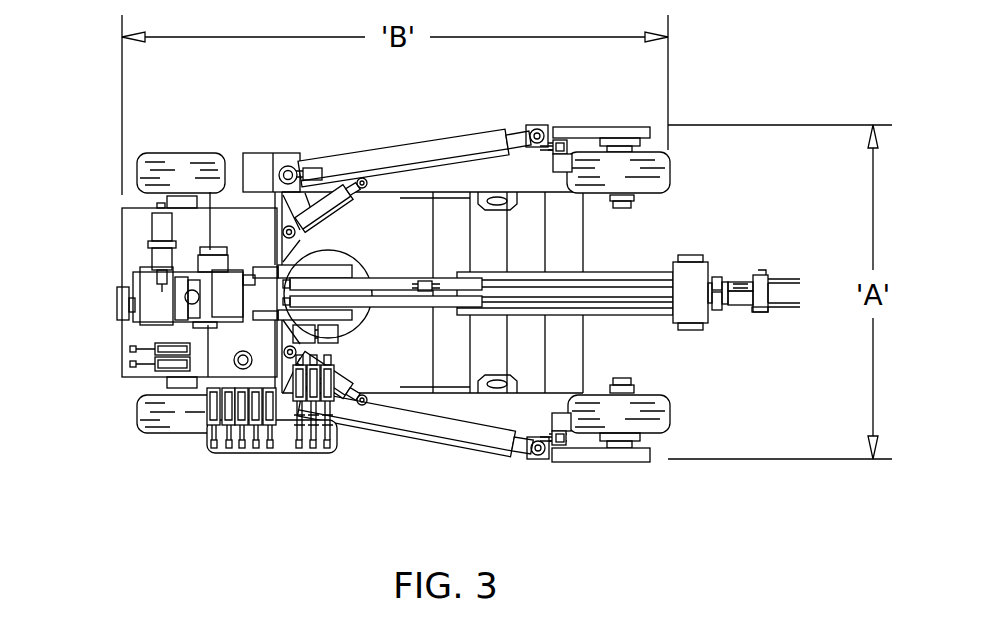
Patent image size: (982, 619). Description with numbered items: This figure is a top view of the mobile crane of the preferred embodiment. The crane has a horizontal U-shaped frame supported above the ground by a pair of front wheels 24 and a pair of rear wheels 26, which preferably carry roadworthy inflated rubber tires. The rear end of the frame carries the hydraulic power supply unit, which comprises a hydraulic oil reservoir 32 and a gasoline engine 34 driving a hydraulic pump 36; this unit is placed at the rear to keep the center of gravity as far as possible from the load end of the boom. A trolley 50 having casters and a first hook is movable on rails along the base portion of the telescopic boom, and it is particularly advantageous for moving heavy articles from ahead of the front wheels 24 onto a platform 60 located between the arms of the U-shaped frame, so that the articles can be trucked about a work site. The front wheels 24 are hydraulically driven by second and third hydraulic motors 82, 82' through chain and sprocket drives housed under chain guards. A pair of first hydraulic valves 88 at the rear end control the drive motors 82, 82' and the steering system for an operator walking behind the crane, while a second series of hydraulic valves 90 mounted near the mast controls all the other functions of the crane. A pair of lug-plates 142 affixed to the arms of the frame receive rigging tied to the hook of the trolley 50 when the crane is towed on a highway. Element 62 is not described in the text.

The front wheels 24 is at (672, 417).
The rear wheels 26 is at (162, 437).
The hydraulic oil reservoir 32 is at (245, 222).
The gasoline engine 34 is at (118, 305).
The hydraulic pump 36 is at (157, 227).
The trolley 50 is at (702, 278).
The platform 60 is at (583, 242).
The wheel 62 is at (218, 215).
The second hydraulic motor 82 is at (556, 117).
The third hydraulic motor 82' is at (574, 464).
The first hydraulic valves 88 is at (130, 348).
The second series of hydraulic valves 90 is at (253, 445).
The lug-plates 142 is at (482, 200).